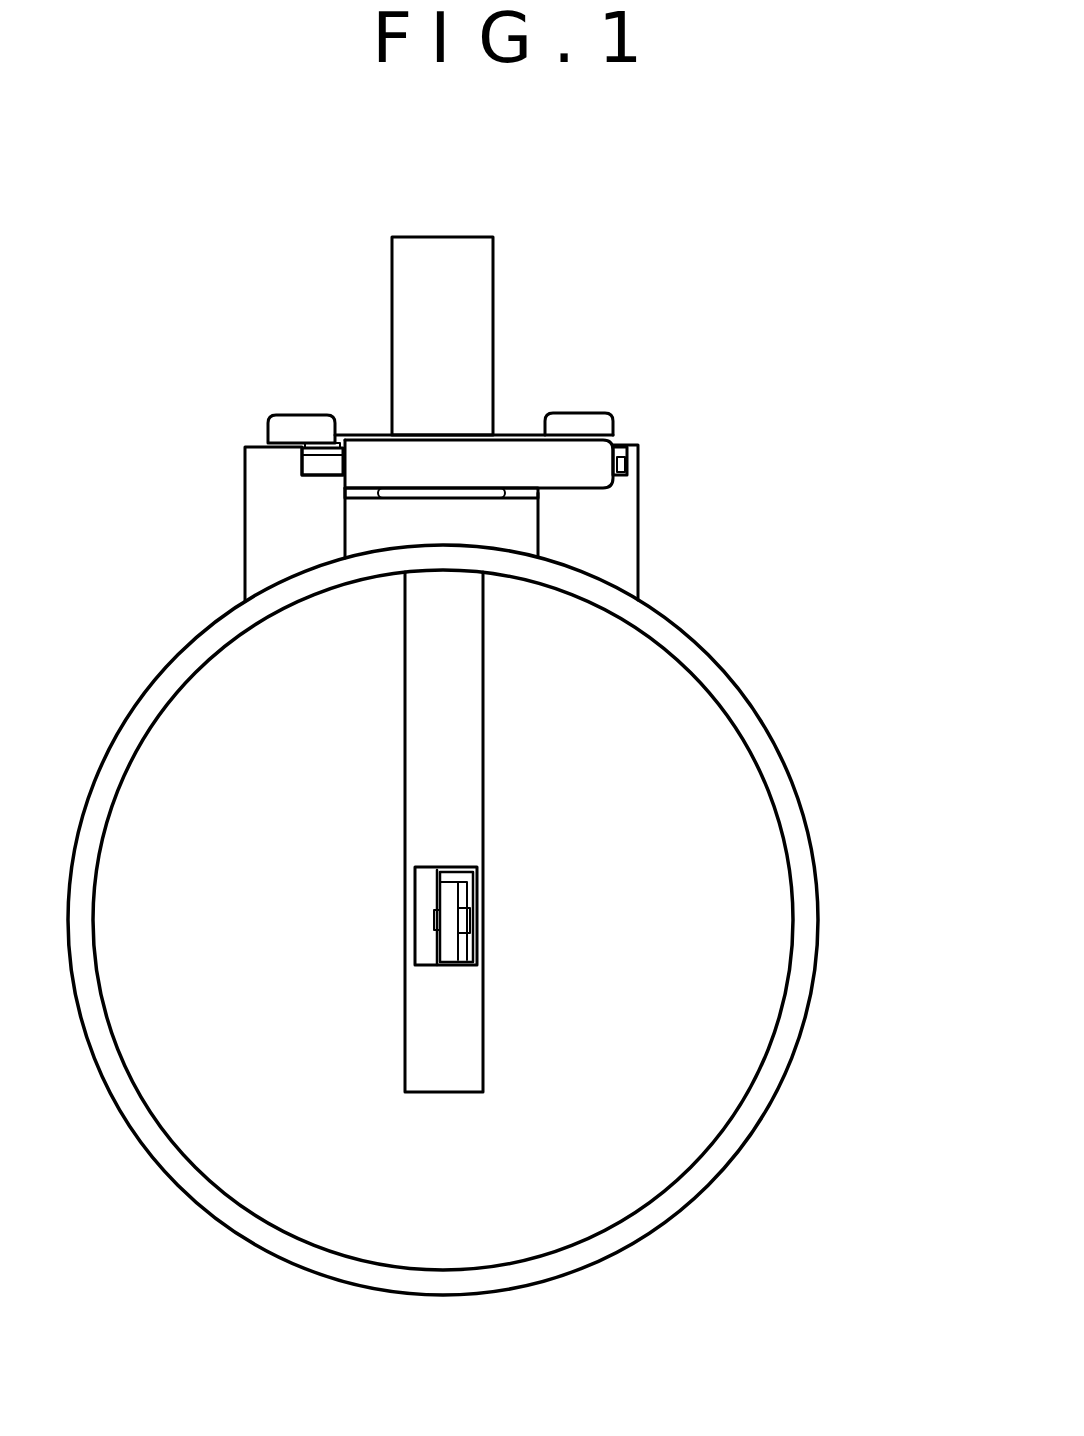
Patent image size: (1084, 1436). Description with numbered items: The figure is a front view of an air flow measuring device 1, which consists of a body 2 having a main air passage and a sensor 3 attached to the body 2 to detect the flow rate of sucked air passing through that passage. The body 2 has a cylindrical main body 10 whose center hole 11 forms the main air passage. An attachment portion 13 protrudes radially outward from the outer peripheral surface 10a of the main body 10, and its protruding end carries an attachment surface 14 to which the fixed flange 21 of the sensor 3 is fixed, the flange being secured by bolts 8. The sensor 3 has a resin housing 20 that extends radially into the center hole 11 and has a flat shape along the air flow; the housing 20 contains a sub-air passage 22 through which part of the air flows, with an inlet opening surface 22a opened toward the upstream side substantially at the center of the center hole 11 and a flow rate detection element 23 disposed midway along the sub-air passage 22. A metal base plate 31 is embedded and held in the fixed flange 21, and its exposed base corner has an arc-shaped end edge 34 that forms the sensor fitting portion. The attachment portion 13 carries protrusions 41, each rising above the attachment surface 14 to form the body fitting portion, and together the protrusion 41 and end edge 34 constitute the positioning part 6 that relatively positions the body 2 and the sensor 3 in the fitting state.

The air flow measuring device 1 is at (692, 361).
The body 2 is at (502, 920).
The sensor 3 is at (495, 291).
The positioning part 6 is at (820, 375).
The bolt 8 is at (298, 427).
The main body 10 is at (782, 787).
The outer peripheral surface 10a is at (717, 658).
The center hole 11 is at (685, 1050).
The attachment portion 13 is at (273, 567).
The attachment surface 14 is at (310, 472).
The housing 20 is at (483, 768).
The fixed flange 21 is at (375, 462).
The sub-air passage 22 is at (372, 868).
The inlet opening surface 22a is at (414, 893).
The flow rate detection element 23 is at (437, 920).
The base plate 31 is at (332, 467).
The end edge 34 is at (630, 472).
The protrusion 41 is at (257, 445).